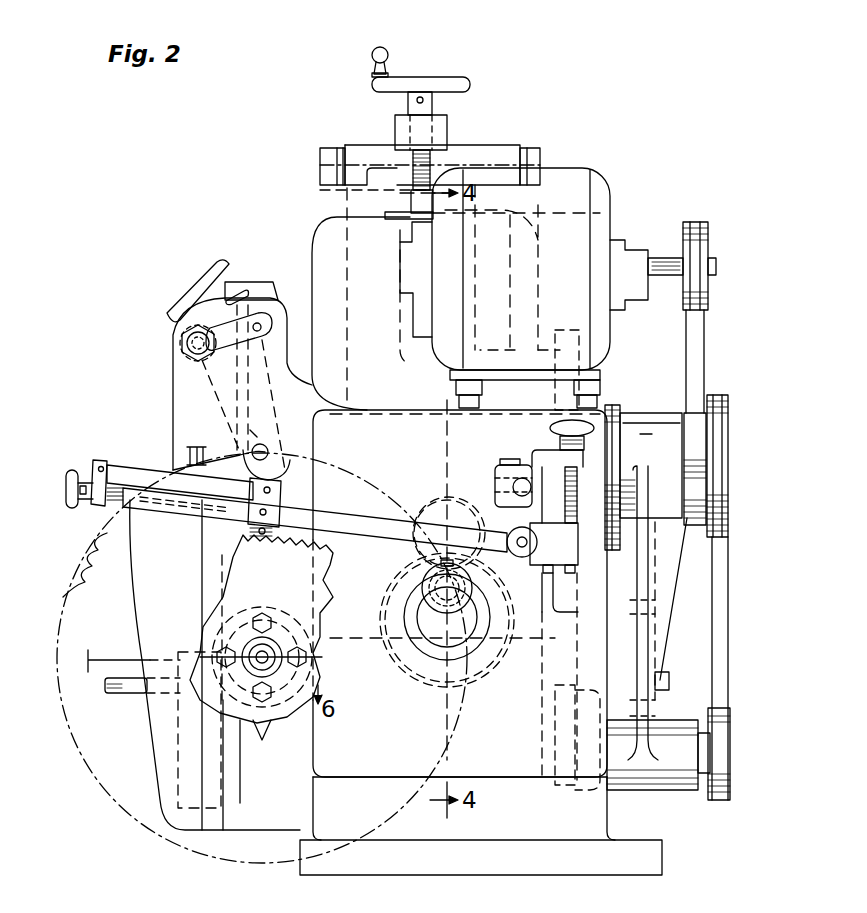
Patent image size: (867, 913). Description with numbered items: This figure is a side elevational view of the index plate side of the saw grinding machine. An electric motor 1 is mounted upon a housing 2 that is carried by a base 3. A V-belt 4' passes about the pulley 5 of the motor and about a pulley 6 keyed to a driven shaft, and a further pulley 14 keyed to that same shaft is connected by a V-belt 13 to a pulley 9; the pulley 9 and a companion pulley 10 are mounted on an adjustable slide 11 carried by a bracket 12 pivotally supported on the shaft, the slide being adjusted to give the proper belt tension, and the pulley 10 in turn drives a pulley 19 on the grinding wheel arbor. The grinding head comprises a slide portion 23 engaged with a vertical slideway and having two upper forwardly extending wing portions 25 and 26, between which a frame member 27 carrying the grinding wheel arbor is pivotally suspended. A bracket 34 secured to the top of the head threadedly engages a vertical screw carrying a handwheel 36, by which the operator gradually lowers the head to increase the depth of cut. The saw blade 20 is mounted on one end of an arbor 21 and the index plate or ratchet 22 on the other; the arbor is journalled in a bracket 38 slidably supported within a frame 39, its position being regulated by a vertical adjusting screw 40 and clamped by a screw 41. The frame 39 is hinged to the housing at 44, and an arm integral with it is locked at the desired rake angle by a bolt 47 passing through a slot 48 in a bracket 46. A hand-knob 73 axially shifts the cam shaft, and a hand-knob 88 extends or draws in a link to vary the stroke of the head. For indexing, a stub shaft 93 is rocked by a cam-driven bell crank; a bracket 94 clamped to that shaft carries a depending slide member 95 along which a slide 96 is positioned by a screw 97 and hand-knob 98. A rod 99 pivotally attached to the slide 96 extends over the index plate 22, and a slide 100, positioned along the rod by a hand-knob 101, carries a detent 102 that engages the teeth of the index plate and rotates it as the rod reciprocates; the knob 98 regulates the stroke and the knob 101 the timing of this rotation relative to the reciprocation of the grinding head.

The electric motor 1 is at (598, 202).
The housing 2 is at (497, 820).
The base 3 is at (532, 856).
The V-belt 4' is at (710, 361).
The pulley 5 is at (708, 243).
The pulley 6 is at (677, 604).
The pulley 9 is at (728, 770).
The pulley 10 is at (560, 742).
The adjustable slide 11 is at (640, 758).
The bracket 12 is at (663, 583).
The V-belt 13 is at (722, 592).
The pulley 14 is at (728, 466).
The pulley 19 is at (580, 348).
The saw blade 20 is at (132, 818).
The arbor 21 is at (270, 652).
The index plate 22 is at (318, 592).
The slide portion 23 is at (505, 650).
The wing portion 25 is at (525, 150).
The wing portion 26 is at (328, 155).
The frame member 27 is at (366, 146).
The bracket 34 is at (438, 142).
The handwheel 36 is at (400, 82).
The bracket 38 is at (258, 728).
The frame 39 is at (134, 600).
The vertical adjusting screw 40 is at (188, 450).
The screw 41 is at (118, 696).
The hinge 44 is at (264, 448).
The bracket 46 is at (185, 338).
The bolt 47 is at (190, 355).
The slot 48 is at (258, 332).
The hand-knob 73 is at (425, 578).
The hand-knob 88 is at (194, 290).
The stub shaft 93 is at (513, 486).
The bracket 94 is at (500, 476).
The depending slide member 95 is at (582, 599).
The slide 96 is at (532, 558).
The screw 97 is at (580, 500).
The hand-knob 98 is at (550, 431).
The rod 99 is at (345, 526).
The slide 100 is at (252, 512).
The hand-knob 101 is at (72, 500).
The detent 102 is at (263, 540).